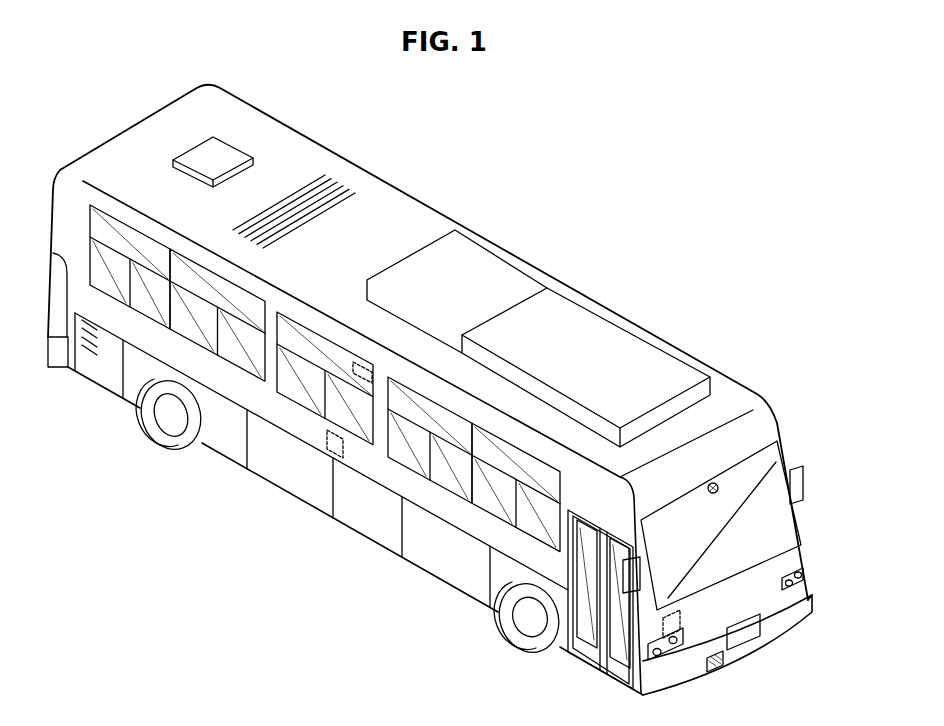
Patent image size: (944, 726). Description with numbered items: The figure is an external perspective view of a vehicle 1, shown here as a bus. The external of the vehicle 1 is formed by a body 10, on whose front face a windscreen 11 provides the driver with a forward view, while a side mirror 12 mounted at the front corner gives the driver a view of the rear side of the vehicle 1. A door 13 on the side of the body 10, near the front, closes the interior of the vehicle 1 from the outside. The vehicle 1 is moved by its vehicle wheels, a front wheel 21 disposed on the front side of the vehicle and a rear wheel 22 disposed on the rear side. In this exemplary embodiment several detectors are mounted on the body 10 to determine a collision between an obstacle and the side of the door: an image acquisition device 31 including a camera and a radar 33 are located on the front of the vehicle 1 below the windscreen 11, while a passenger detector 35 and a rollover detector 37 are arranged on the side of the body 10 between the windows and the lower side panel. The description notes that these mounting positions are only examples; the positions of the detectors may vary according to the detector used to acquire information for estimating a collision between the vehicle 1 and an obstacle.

The vehicle 1 is at (709, 154).
The body 10 is at (726, 350).
The windscreen 11 is at (778, 516).
The side mirror 12 is at (800, 484).
The door 13 is at (596, 640).
The front wheel 21 is at (512, 623).
The rear wheel 22 is at (153, 425).
The image acquisition device 31 is at (683, 620).
The radar 33 is at (723, 670).
The passenger detector 35 is at (353, 362).
The rollover detector 37 is at (326, 438).